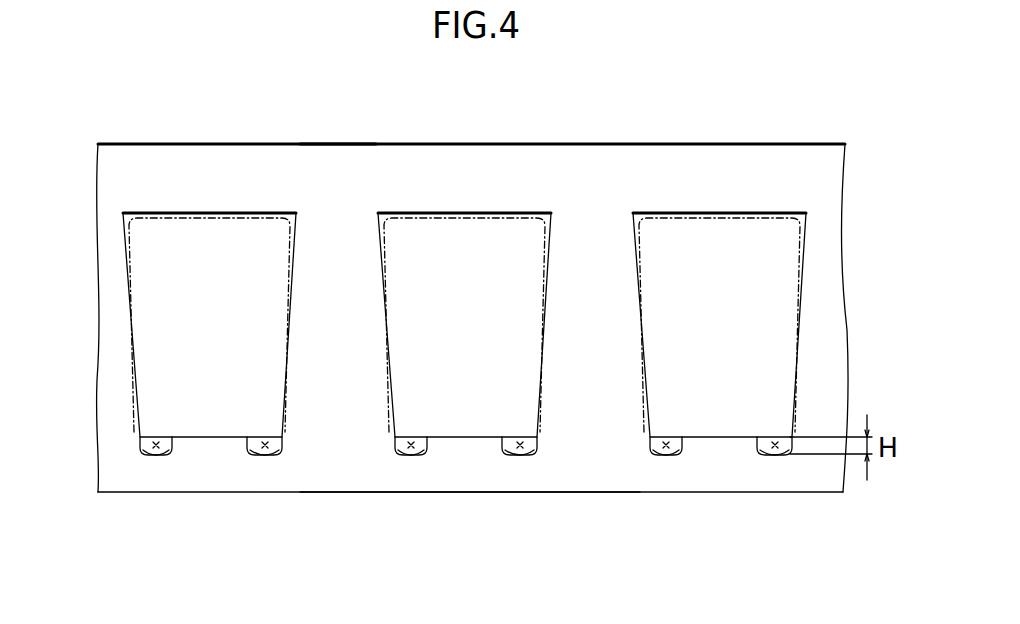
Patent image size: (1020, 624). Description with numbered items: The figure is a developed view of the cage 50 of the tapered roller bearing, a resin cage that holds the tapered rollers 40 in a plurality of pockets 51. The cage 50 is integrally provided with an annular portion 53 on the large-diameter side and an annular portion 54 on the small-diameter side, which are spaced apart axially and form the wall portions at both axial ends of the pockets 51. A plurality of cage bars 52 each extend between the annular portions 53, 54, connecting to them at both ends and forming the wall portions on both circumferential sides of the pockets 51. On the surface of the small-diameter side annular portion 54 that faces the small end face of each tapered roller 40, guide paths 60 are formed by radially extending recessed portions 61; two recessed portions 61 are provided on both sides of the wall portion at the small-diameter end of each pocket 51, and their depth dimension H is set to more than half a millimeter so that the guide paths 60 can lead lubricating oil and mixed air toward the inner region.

The tapered roller 40 is at (290, 282).
The cage 50 is at (790, 140).
The pocket 51 is at (205, 270).
The cage bar 52 is at (113, 307).
The large-diameter side annular portion 53 is at (510, 163).
The small-diameter side annular portion 54 is at (468, 480).
The guide path 60 is at (171, 456).
The recessed portion 61 is at (152, 455).